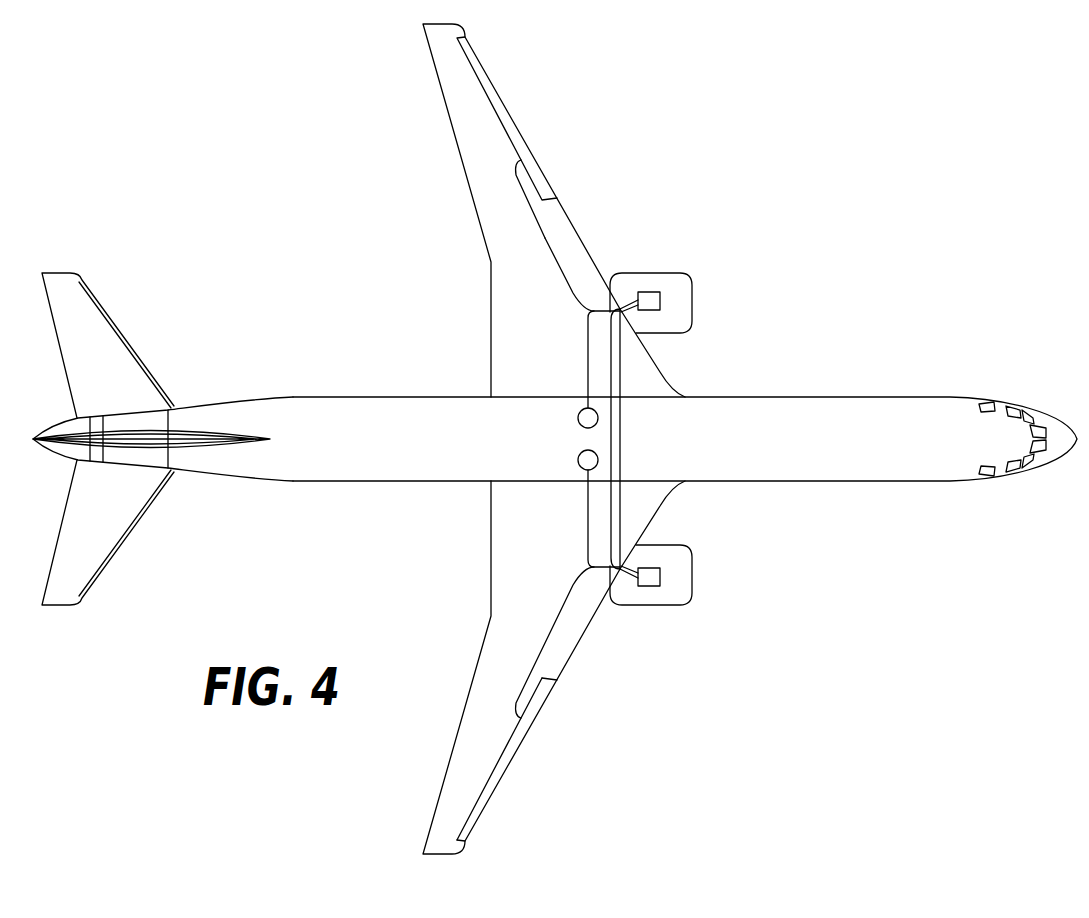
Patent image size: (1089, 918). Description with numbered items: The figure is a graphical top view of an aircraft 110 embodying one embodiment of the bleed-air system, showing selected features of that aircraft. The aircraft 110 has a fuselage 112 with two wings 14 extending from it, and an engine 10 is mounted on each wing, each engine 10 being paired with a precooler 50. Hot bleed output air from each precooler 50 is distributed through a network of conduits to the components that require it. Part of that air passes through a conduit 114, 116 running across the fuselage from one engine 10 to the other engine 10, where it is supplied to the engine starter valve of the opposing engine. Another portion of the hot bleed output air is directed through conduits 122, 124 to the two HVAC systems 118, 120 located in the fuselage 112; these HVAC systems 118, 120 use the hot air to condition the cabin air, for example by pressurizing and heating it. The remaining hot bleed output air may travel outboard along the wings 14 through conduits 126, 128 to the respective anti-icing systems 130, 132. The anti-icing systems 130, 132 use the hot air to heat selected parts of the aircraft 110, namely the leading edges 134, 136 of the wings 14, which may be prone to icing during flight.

The engine 10 is at (693, 277).
The wing 14 is at (482, 240).
The precooler 50 is at (648, 292).
The aircraft 110 is at (819, 534).
The fuselage 112 is at (733, 482).
The conduit 114 is at (610, 458).
The conduit 116 is at (623, 422).
The HVAC system 118 is at (578, 460).
The HVAC system 120 is at (578, 415).
The conduit 122 is at (585, 513).
The conduit 124 is at (587, 347).
The conduit 126 is at (557, 620).
The conduit 128 is at (545, 238).
The anti-icing system 130 is at (520, 733).
The anti-icing system 132 is at (507, 110).
The leading edge 134 is at (500, 787).
The leading edge 136 is at (540, 157).